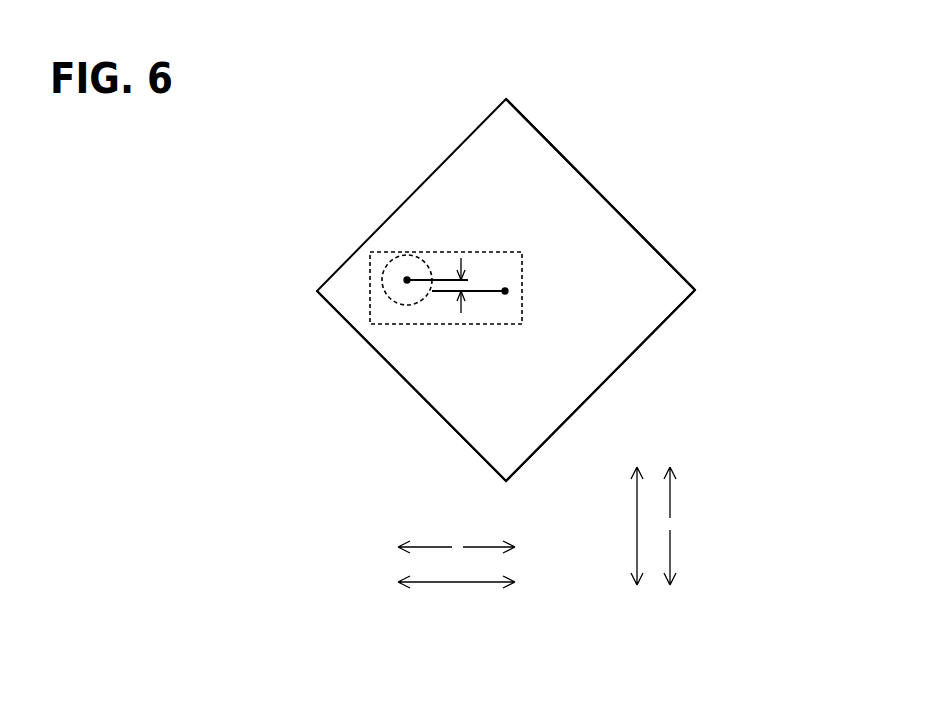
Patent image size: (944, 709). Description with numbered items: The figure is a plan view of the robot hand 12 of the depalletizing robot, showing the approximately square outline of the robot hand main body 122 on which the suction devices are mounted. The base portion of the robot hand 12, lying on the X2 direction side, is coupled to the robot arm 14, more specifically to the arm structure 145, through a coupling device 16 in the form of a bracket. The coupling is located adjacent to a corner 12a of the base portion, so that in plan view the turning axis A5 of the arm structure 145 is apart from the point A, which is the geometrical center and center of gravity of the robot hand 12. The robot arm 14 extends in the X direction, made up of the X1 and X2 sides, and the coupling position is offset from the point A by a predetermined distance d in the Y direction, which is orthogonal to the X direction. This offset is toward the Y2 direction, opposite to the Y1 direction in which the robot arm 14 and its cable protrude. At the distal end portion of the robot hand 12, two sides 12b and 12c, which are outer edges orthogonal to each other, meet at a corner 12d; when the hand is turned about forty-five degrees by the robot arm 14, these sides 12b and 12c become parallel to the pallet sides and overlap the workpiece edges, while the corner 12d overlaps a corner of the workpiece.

The robot hand 12 is at (547, 88).
The robot hand main body 122 is at (532, 172).
The corner 12a is at (317, 291).
The side 12b is at (657, 248).
The side 12c is at (650, 337).
The corner 12d is at (695, 290).
The robot arm 14 is at (367, 239).
The arm structure 145 is at (393, 257).
The coupling device 16 is at (455, 252).
The turning axis A5 is at (407, 280).
The point A is at (507, 290).
The predetermined distance d is at (468, 282).
The X direction X is at (456, 597).
The X1 direction X1 is at (489, 560).
The X2 direction X2 is at (425, 560).
The Y direction Y is at (645, 526).
The Y1 direction Y1 is at (685, 557).
The Y2 direction Y2 is at (685, 495).